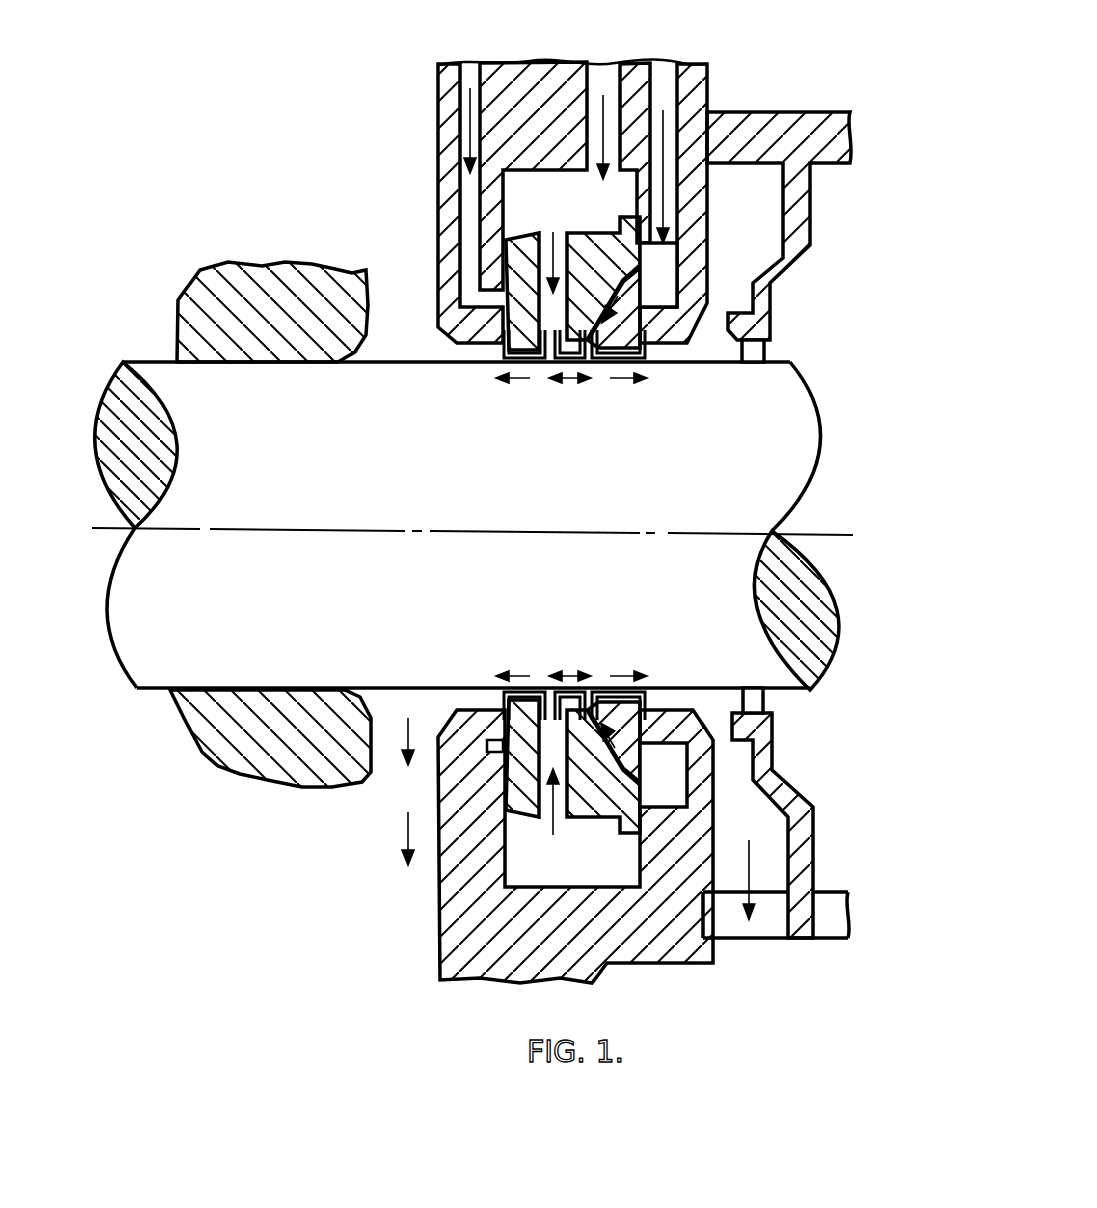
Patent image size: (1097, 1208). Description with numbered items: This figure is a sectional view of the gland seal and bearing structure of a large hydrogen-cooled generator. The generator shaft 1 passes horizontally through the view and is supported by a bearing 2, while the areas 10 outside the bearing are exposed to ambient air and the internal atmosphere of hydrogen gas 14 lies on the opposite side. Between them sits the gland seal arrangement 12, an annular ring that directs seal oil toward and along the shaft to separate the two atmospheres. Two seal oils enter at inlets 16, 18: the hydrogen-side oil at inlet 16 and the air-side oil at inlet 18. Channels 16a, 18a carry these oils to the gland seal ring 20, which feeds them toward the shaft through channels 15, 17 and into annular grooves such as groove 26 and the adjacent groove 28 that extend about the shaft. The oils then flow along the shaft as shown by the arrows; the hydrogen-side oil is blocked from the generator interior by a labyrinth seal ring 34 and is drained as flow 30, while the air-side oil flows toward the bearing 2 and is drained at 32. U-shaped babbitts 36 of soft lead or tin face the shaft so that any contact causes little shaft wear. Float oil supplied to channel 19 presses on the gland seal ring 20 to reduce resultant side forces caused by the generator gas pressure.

The generator shaft 1 is at (120, 580).
The bearing 2 is at (215, 752).
The areas outside of the bearing 10 is at (148, 303).
The gland seal arrangement 12 is at (434, 137).
The internal atmosphere of hydrogen gas 14 is at (860, 265).
The channel 15 is at (554, 233).
The inlet 16 is at (668, 65).
The channel 16a is at (668, 250).
The channel 17 is at (624, 285).
The inlet 18 is at (608, 72).
The channel 18a is at (517, 190).
The channel 19 is at (470, 72).
The gland seal ring 20 is at (513, 262).
The groove 26 is at (592, 365).
The seal lip 28 is at (549, 365).
The flow to drain 30 is at (747, 868).
The drain 32 is at (407, 833).
The labyrinth seal ring 34 is at (764, 699).
The U-shaped babbitts 36 is at (506, 362).